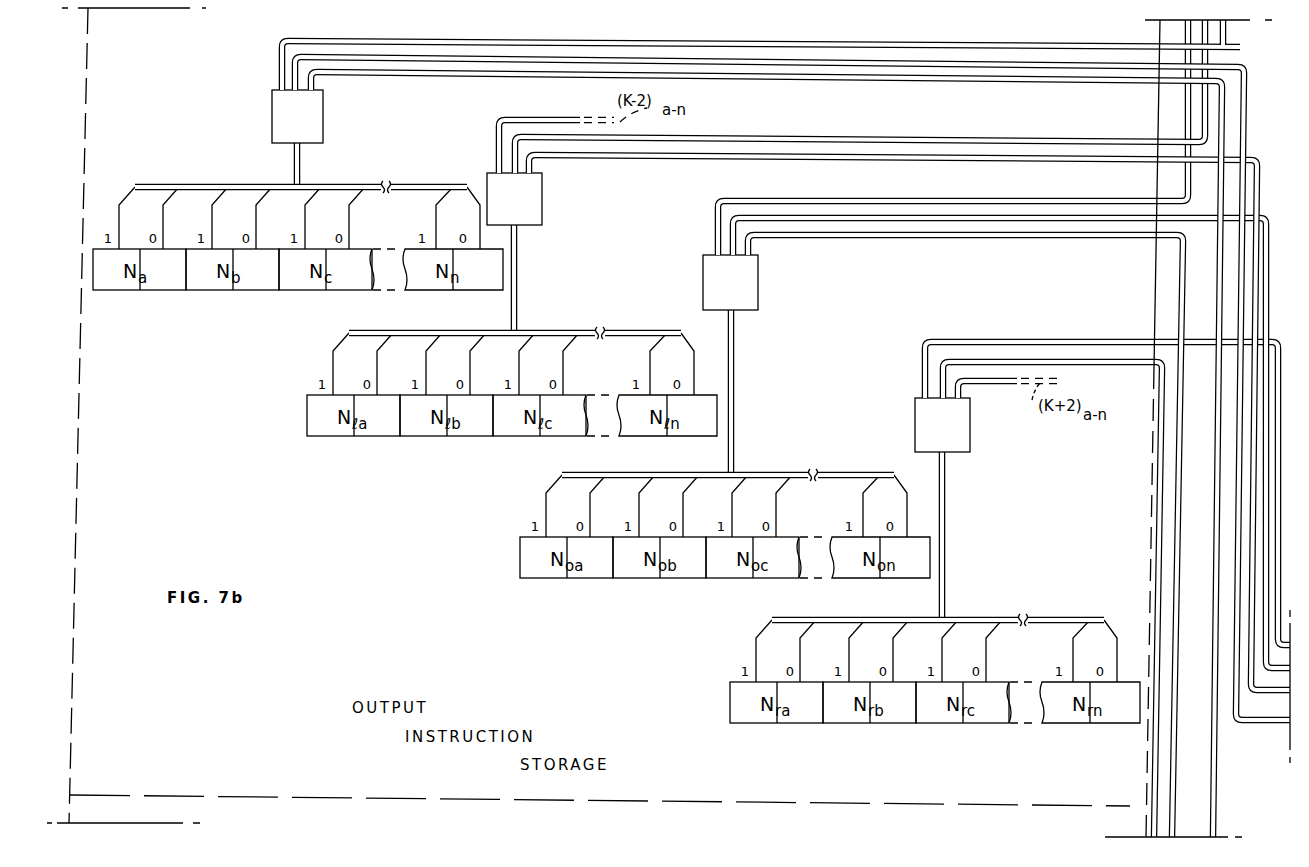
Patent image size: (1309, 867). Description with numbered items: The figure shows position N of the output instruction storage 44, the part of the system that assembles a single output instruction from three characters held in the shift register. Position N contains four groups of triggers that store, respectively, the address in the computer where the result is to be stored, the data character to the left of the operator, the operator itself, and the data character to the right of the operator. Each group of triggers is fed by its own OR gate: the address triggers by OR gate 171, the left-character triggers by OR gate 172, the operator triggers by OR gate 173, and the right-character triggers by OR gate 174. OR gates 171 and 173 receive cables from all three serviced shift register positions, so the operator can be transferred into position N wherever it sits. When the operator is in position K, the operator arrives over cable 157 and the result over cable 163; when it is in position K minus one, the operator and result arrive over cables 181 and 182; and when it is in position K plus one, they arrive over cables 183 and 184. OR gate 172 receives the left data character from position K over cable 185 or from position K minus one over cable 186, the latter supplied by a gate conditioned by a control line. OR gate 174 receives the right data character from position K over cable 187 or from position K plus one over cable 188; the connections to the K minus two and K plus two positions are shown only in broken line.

The output instruction storage 44 is at (88, 128).
The OR gate 171 is at (323, 117).
The OR gate 172 is at (542, 218).
The OR gate 173 is at (758, 303).
The OR gate 174 is at (970, 438).
The cable 182 is at (279, 57).
The cable 163 is at (425, 62).
The cable 184 is at (848, 80).
The cable 181 is at (715, 211).
The cable 186 is at (1143, 140).
The cable 185 is at (597, 158).
The cable 157 is at (790, 223).
The cable 183 is at (847, 238).
The cable 188 is at (977, 362).
The cable 187 is at (925, 367).